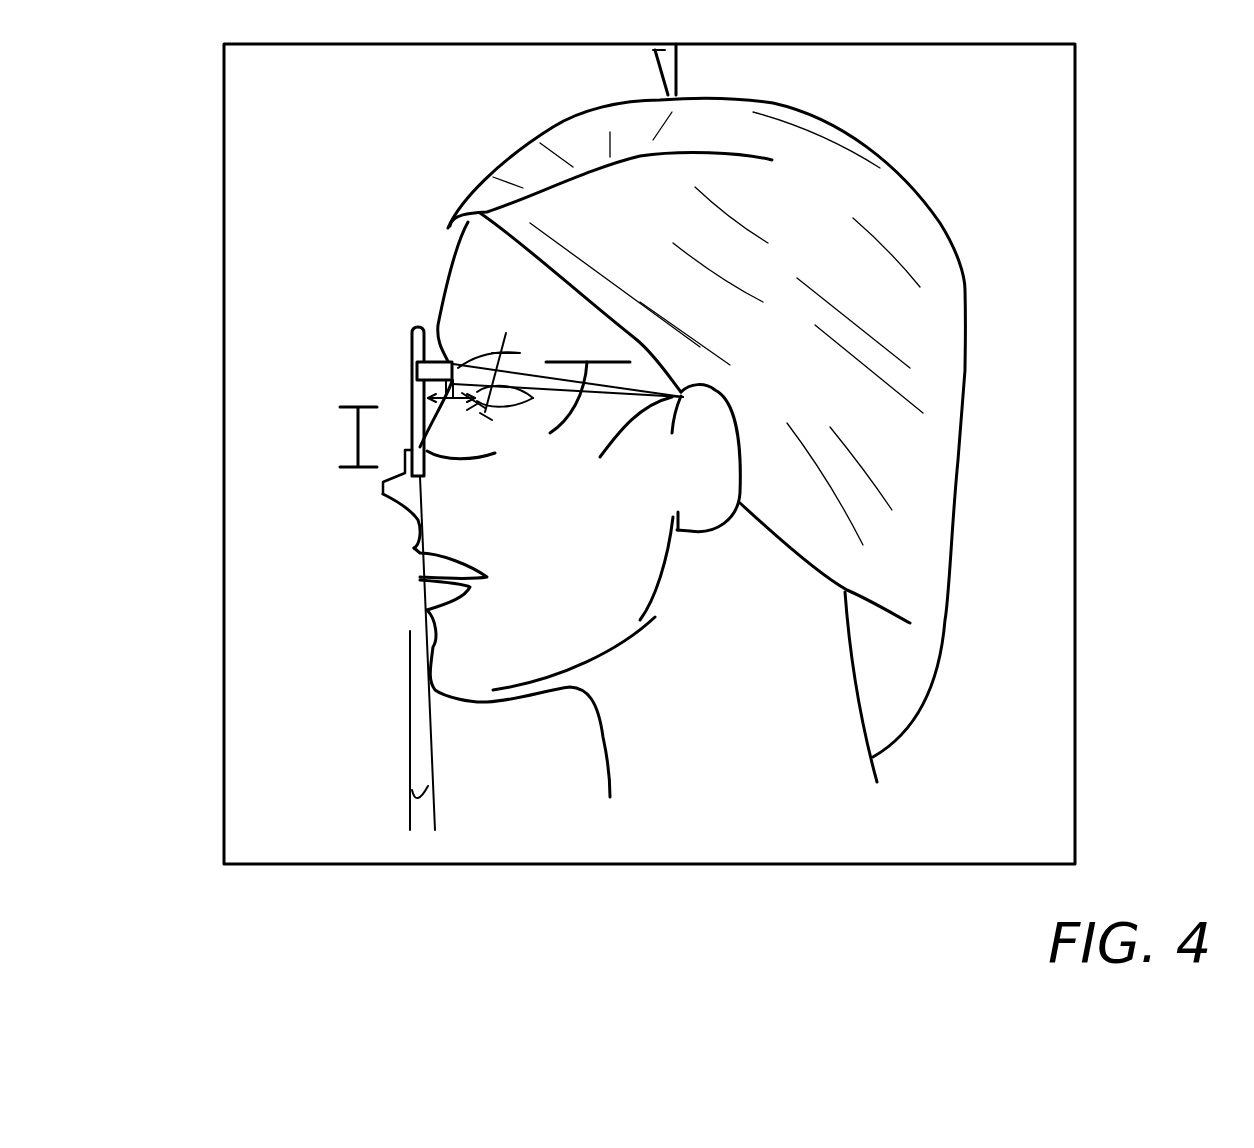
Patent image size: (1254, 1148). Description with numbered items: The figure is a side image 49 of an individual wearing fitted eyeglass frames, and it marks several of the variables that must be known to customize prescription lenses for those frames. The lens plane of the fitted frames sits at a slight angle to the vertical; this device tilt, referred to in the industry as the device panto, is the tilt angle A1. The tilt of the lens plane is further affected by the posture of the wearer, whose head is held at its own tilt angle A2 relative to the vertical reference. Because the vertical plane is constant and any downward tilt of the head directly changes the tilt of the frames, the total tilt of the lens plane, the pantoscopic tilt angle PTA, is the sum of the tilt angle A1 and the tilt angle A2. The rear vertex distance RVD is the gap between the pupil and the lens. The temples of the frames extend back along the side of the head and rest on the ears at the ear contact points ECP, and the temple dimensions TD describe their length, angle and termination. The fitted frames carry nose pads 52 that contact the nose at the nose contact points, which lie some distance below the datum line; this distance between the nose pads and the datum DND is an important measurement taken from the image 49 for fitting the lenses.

The side image 49 is at (224, 590).
The nose pads 52 is at (383, 493).
The rear vertex distance RVD is at (436, 332).
The temple dimensions TD is at (557, 353).
The tilt angle A1 is at (507, 412).
The tilt angle A2 is at (660, 52).
The distance between nose pad contact and datum DND is at (357, 437).
The ear contact points ECP is at (617, 450).
The pantoscopic tilt angle PTA is at (417, 803).